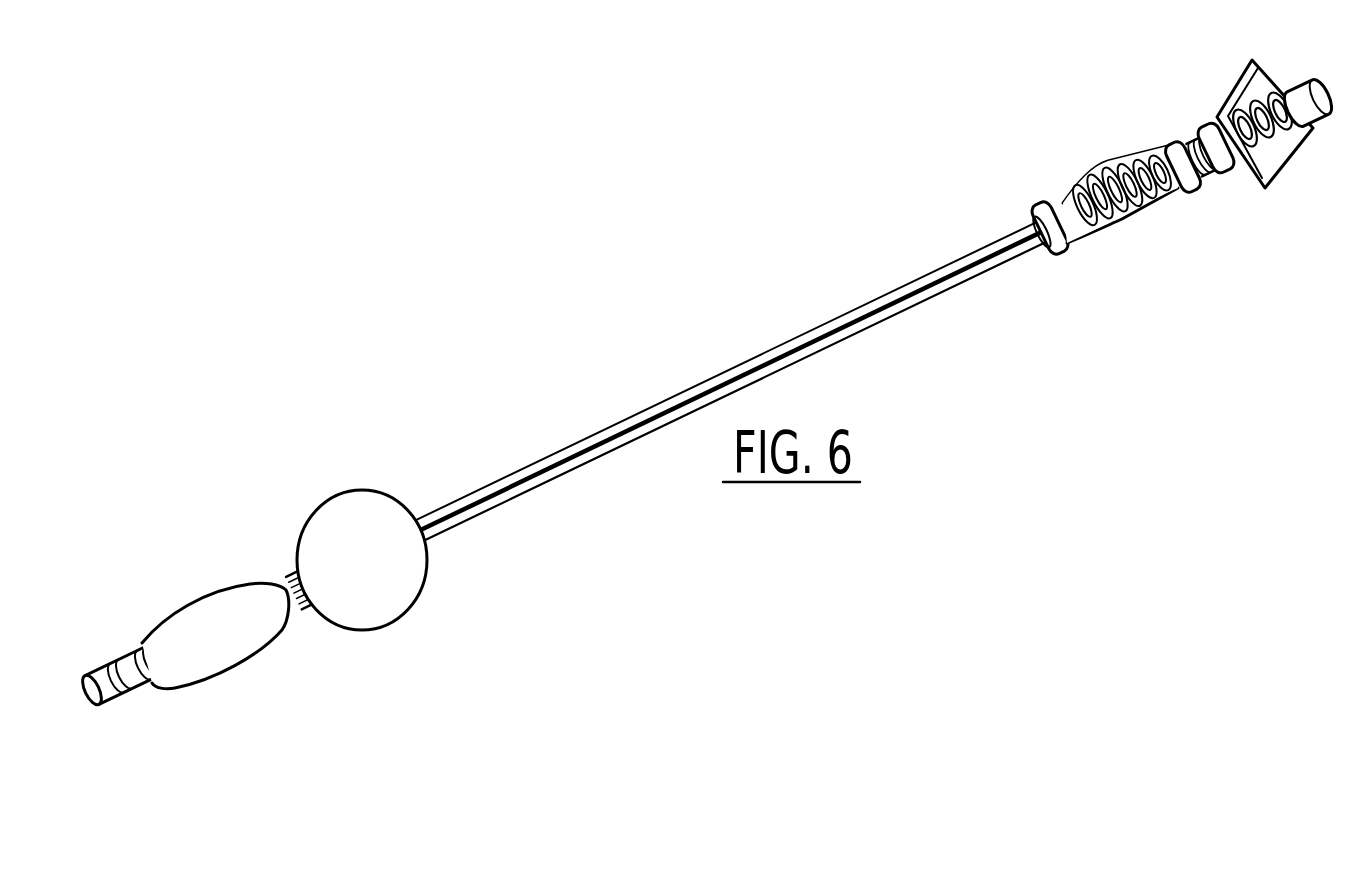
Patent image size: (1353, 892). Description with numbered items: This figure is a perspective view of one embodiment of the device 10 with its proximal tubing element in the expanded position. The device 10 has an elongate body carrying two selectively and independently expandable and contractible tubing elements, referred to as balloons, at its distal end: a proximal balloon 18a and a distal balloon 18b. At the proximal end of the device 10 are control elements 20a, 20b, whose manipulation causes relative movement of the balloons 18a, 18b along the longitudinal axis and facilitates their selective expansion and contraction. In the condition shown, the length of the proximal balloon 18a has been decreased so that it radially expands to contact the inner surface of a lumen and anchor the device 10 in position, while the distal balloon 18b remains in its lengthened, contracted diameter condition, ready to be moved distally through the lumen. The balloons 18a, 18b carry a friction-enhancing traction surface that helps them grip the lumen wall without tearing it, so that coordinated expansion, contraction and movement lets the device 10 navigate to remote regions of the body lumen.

The device 10 is at (763, 278).
The proximal balloon 18a is at (397, 593).
The distal balloon 18b is at (227, 650).
The control element 20a is at (1282, 166).
The control element 20b is at (1143, 217).